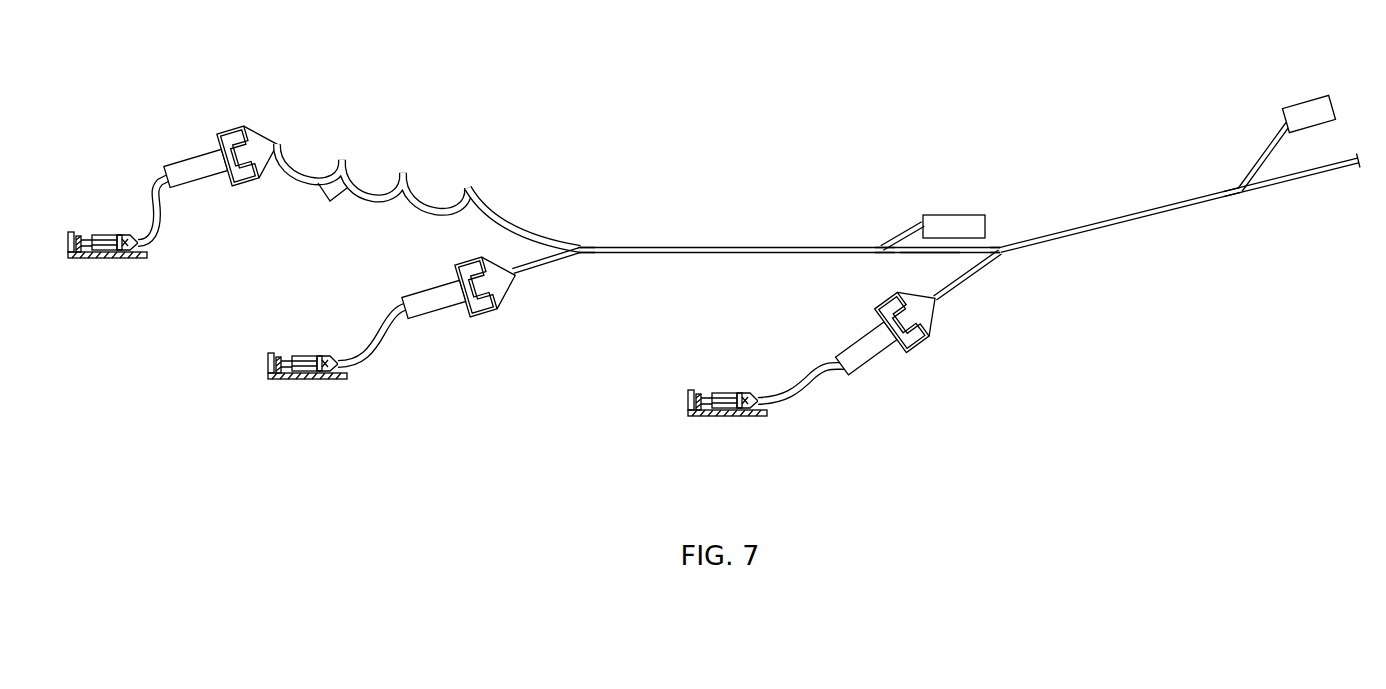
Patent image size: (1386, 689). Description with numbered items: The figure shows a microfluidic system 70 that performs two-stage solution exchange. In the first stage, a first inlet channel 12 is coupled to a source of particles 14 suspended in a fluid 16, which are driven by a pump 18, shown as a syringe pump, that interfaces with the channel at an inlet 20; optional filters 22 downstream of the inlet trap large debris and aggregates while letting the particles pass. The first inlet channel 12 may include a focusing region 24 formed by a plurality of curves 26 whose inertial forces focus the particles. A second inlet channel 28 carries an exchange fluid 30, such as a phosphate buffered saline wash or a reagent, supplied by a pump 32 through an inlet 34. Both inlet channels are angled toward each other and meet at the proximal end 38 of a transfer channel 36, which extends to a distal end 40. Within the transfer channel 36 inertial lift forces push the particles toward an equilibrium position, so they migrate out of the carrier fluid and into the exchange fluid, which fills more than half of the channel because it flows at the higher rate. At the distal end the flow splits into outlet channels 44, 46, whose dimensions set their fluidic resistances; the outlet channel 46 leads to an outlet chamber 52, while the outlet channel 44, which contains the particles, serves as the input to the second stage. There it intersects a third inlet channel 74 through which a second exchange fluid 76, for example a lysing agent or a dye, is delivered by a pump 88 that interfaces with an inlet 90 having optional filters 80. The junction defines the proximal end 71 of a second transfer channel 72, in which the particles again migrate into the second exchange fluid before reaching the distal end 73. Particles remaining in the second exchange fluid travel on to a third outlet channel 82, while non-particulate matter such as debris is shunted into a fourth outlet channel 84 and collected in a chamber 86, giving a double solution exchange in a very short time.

The first inlet channel 12 is at (513, 230).
The particles 14 is at (127, 236).
The fluid 16 is at (132, 258).
The pump 18 is at (98, 272).
The inlet 20 is at (175, 161).
The filters 22 is at (250, 184).
The focusing region 24 is at (377, 174).
The curves 26 is at (331, 203).
The second inlet channel 28 is at (540, 268).
The exchange fluid 30 is at (333, 360).
The pump 32 is at (304, 390).
The inlet 34 is at (421, 306).
The transfer channel 36 is at (721, 258).
The proximal end 38 is at (583, 247).
The distal end 40 is at (880, 247).
The outlet channel 44 is at (927, 258).
The outlet channel 46 is at (908, 226).
The outlet chamber 52 is at (958, 213).
The microfluidic system 70 is at (746, 145).
The proximal end 71 is at (1000, 248).
The second transfer channel 72 is at (1105, 222).
The distal end 73 is at (1231, 191).
The third inlet channel 74 is at (967, 284).
The second exchange fluid 76 is at (748, 397).
The filters 80 is at (917, 343).
The third outlet channel 82 is at (1311, 182).
The fourth outlet channel 84 is at (1257, 158).
The chamber 86 is at (1307, 100).
The pump 88 is at (721, 430).
The inlet 90 is at (862, 353).